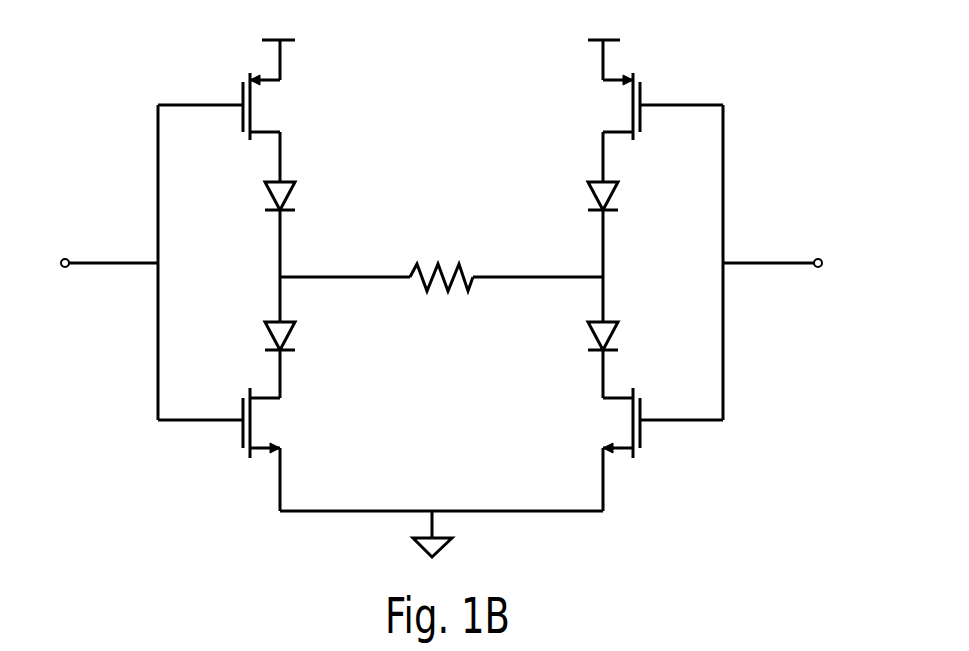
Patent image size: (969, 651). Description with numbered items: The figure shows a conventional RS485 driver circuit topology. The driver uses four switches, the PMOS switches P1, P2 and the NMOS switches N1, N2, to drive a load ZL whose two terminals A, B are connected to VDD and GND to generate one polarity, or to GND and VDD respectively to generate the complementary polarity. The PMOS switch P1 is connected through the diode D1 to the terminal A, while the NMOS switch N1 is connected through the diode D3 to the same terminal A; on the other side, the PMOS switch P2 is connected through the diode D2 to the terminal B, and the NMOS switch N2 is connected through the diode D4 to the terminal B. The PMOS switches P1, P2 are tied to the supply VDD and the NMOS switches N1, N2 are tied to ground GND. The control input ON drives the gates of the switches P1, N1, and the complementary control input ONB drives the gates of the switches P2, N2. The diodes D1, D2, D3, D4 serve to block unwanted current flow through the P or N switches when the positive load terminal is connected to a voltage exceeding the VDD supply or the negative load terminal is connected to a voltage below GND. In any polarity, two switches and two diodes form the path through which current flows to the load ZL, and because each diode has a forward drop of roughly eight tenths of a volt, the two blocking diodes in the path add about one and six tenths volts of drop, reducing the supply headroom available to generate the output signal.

The PMOS switch P1 is at (268, 127).
The PMOS switch P2 is at (612, 127).
The NMOS switch N1 is at (274, 449).
The NMOS switch N2 is at (606, 449).
The diode D1 is at (296, 229).
The diode D2 is at (586, 229).
The diode D3 is at (296, 337).
The diode D4 is at (586, 337).
The load ZL is at (441, 299).
The terminal A is at (345, 261).
The terminal B is at (538, 261).
The ON signal ON is at (131, 262).
The ONB signal ONB is at (760, 262).
The VDD supply VDD is at (441, 42).
The ground GND is at (441, 534).